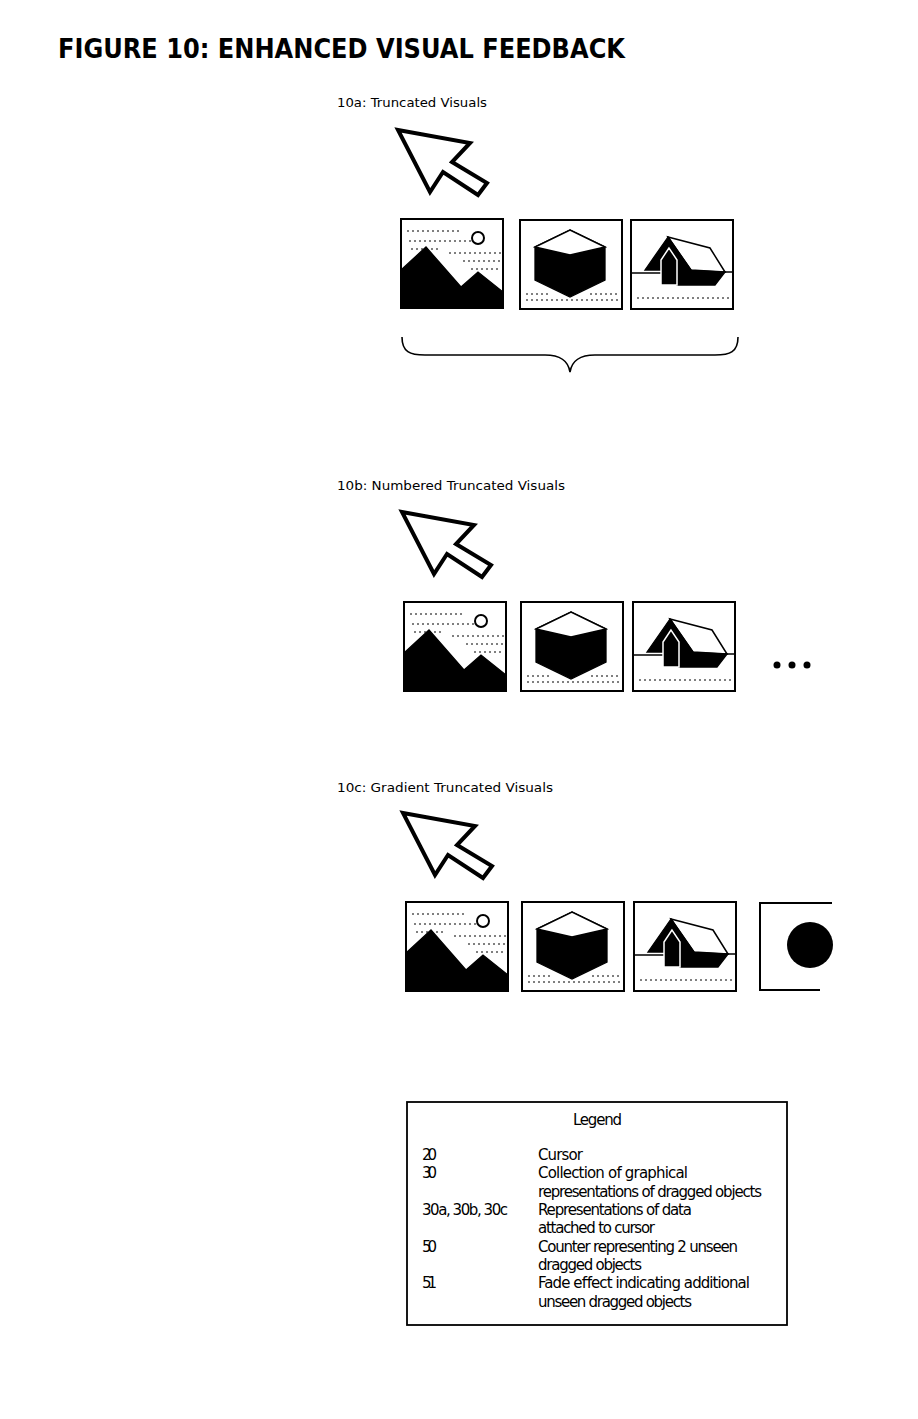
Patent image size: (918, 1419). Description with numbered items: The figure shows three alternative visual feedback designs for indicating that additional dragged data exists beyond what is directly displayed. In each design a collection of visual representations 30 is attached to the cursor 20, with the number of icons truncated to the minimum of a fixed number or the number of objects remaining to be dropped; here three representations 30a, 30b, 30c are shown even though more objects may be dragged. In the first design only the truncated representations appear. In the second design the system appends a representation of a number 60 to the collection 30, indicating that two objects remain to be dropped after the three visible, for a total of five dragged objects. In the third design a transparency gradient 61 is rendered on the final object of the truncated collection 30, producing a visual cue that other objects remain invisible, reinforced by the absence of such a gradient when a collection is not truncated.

The cursor 20 is at (472, 168).
The collection of visual representations 30 is at (570, 372).
The visual representation 30a is at (417, 309).
The visual representation 30b is at (533, 309).
The visual representation 30c is at (645, 309).
The representation of a number 60 is at (765, 672).
The transparency gradient 61 is at (773, 990).